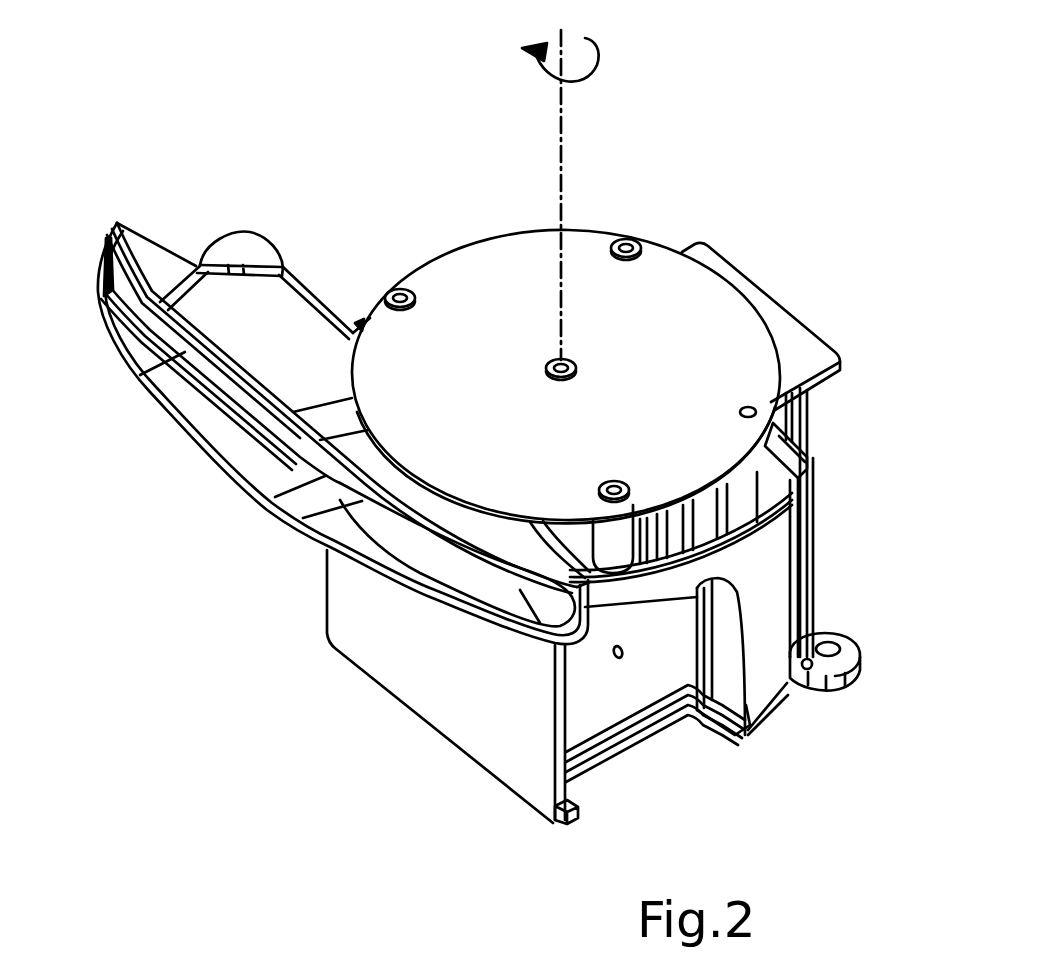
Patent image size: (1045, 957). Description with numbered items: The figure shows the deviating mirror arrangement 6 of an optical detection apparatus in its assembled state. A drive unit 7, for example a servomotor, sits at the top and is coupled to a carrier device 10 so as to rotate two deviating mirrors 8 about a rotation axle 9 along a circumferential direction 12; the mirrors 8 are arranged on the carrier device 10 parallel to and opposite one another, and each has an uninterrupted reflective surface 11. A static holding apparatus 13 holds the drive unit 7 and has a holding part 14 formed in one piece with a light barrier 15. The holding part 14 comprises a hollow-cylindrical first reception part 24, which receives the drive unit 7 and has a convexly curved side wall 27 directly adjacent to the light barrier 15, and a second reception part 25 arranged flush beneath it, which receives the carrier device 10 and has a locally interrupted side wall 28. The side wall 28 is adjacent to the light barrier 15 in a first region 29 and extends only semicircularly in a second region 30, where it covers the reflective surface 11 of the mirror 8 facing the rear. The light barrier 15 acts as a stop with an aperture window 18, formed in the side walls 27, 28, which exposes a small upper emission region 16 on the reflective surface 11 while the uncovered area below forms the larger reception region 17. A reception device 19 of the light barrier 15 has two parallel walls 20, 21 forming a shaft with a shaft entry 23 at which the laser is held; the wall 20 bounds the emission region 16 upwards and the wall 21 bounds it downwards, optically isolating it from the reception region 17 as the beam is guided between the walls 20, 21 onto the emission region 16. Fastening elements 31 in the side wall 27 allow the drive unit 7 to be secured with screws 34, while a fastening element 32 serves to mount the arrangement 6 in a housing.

The deviating mirror arrangement 6 is at (727, 143).
The drive unit 7 is at (483, 265).
The deviating mirror 8 is at (480, 740).
The rotation axle 9 is at (558, 121).
The carrier device 10 is at (600, 730).
The reflective surface 11 is at (373, 632).
The circumferential direction 12 is at (588, 44).
The holding apparatus 13 is at (152, 449).
The holding part 14 is at (841, 461).
The light barrier 15 is at (114, 221).
The emission region 16 is at (414, 550).
The reception region 17 is at (507, 701).
The aperture window 18 is at (439, 603).
The reception device 19 is at (140, 338).
The wall 20 is at (292, 330).
The wall 21 is at (243, 452).
The shaft entry 23 is at (187, 245).
The first reception part 24 is at (830, 425).
The second reception part 25 is at (830, 540).
The side wall 27 is at (805, 406).
The side wall 28 is at (771, 553).
The first region 29 is at (654, 616).
The second region 30 is at (765, 641).
The fastening element 31 is at (613, 540).
The fastening element 32 is at (869, 659).
The screw 34 is at (627, 240).